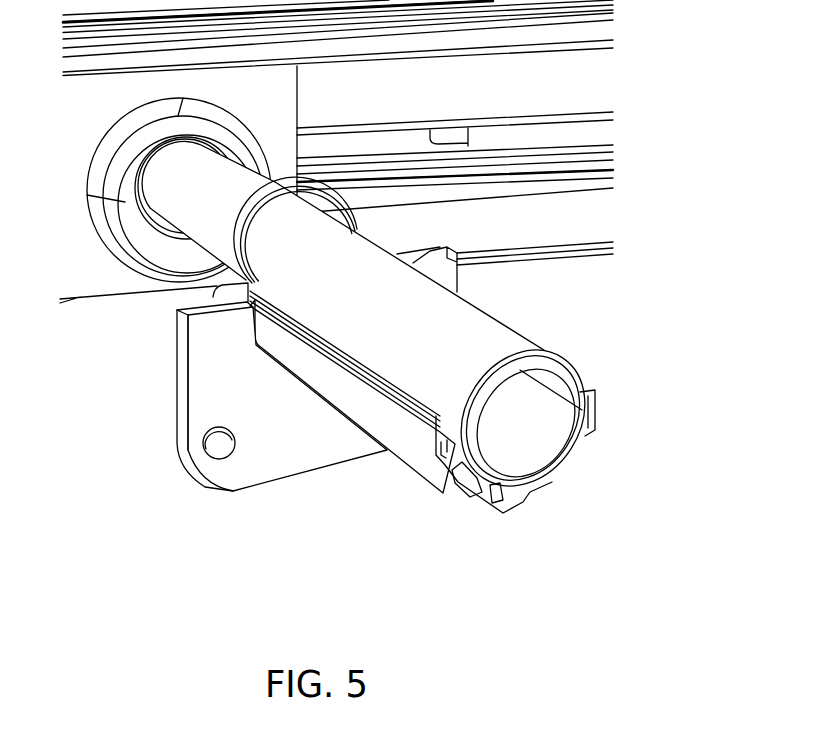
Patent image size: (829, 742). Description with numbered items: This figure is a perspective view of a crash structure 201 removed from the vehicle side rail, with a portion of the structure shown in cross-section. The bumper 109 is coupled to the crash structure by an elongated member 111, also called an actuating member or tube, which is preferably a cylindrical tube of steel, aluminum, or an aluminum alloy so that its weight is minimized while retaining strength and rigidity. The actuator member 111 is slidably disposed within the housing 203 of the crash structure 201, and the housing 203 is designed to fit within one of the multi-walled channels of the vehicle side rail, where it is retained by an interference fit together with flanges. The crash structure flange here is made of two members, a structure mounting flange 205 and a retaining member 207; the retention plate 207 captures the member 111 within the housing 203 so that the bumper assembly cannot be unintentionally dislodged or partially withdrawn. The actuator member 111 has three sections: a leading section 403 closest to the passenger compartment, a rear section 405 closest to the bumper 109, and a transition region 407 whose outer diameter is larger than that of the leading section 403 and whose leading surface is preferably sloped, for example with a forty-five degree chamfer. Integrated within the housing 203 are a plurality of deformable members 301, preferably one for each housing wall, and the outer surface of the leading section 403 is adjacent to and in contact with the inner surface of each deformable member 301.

The bumper 109 is at (386, 98).
The elongated member 111 is at (190, 267).
The crash structure 201 is at (318, 437).
The housing 203 is at (350, 393).
The structure mounting flange 205 is at (240, 368).
The retaining member 207 is at (167, 395).
The deformable members 301 is at (532, 499).
The leading section 403 is at (410, 324).
The rear section 405 is at (238, 211).
The transition region 407 is at (297, 226).